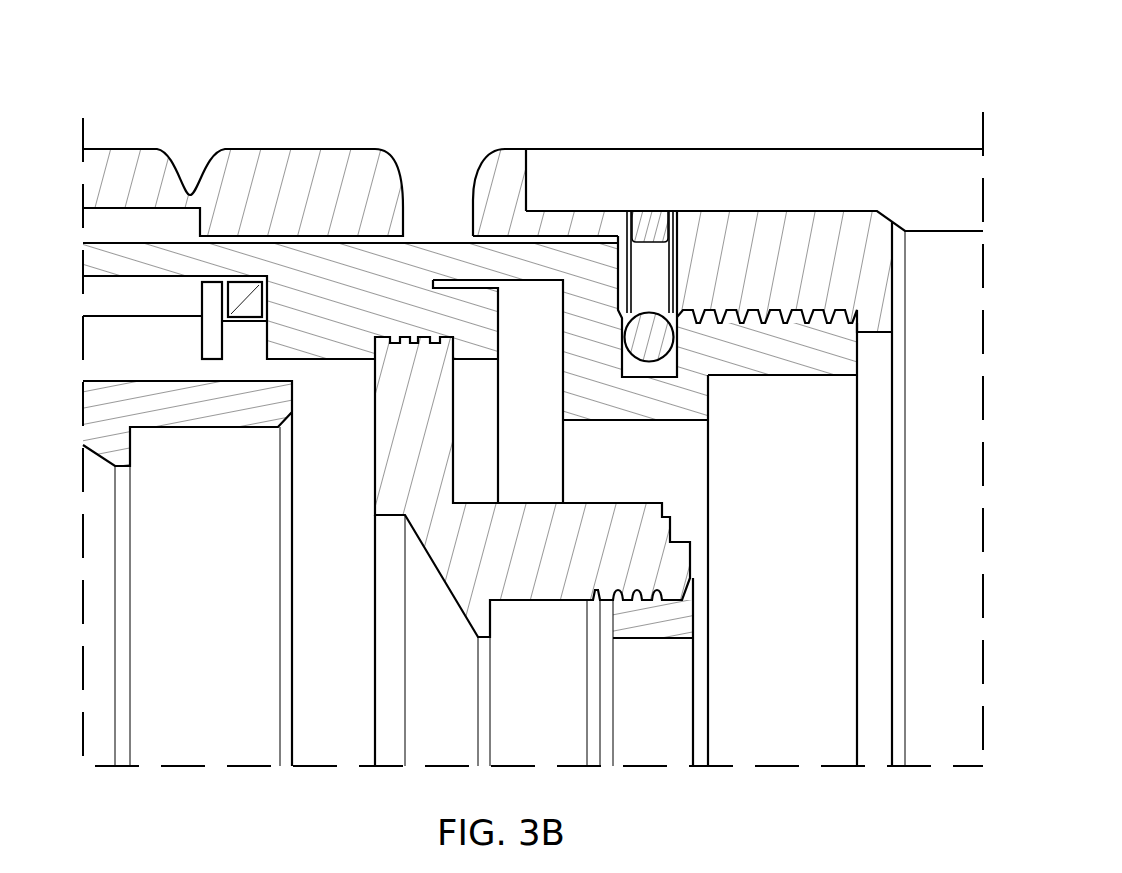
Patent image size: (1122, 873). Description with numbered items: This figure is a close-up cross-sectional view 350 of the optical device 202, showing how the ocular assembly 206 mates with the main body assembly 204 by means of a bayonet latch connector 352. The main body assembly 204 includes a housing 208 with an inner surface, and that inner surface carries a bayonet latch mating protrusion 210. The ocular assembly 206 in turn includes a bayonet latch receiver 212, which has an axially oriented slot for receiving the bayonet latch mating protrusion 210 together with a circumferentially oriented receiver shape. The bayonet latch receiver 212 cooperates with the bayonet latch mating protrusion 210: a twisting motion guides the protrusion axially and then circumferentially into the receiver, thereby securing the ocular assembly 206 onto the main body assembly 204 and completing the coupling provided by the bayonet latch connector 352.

The optical device 202 is at (829, 58).
The schematic diagram 350 is at (1020, 58).
The main body assembly 204 is at (883, 140).
The ocular assembly 206 is at (270, 140).
The housing 208 is at (745, 148).
The bayonet latch mating protrusion 210 is at (675, 311).
The bayonet latch connector 352 is at (616, 228).
The bayonet latch receiver 212 is at (620, 357).